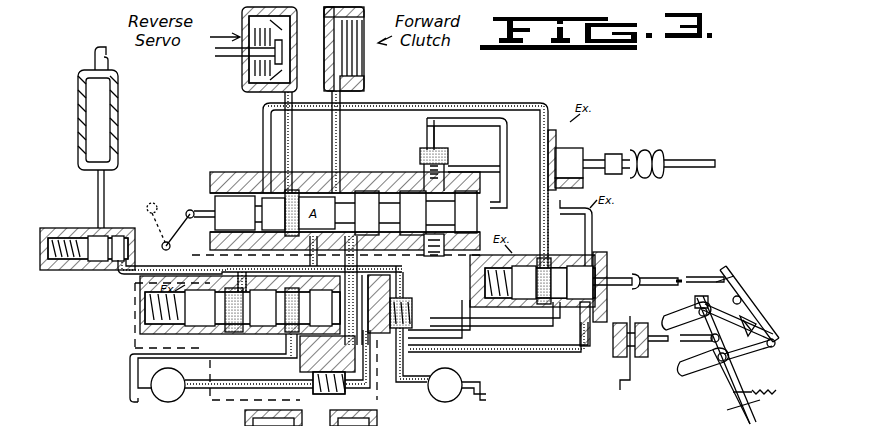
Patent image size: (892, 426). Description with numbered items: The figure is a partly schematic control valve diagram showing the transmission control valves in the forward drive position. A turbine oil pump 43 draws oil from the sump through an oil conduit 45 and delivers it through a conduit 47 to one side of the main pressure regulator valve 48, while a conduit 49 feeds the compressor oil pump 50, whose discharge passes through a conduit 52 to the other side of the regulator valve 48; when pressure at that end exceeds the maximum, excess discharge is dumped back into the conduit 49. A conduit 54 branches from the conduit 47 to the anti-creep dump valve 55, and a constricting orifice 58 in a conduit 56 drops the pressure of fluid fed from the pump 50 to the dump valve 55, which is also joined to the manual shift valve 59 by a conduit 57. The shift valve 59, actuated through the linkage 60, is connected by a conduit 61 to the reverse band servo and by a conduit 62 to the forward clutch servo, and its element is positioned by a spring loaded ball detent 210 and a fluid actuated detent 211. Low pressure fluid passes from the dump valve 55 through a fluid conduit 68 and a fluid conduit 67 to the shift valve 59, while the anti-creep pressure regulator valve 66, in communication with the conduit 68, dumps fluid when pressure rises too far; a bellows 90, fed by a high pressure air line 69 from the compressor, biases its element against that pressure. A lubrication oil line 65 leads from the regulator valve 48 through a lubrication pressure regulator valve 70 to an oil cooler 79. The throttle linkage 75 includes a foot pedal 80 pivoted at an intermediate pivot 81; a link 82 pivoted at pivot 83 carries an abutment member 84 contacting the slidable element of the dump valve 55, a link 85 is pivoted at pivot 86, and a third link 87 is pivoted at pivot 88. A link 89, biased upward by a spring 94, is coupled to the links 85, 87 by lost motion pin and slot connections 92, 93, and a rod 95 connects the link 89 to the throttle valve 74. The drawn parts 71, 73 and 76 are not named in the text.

The turbine oil pump 43 is at (426, 334).
The oil conduit 45 is at (490, 397).
The conduit 47 is at (453, 336).
The main pressure regulator valve 48 is at (132, 317).
The conduit 49 is at (130, 399).
The compressor oil pump 50 is at (168, 385).
The conduit 52 is at (200, 392).
The conduit 54 is at (520, 360).
The anti-creep dump valve 55 is at (621, 269).
The conduit 56 is at (500, 338).
The conduit 57 is at (597, 226).
The constricting orifice 58 is at (402, 274).
The manual shift valve 59 is at (241, 183).
The linkage 60 is at (178, 200).
The conduit 61 is at (294, 158).
The conduit 62 is at (293, 130).
The lubrication oil line 65 is at (182, 264).
The anti-creep pressure regulator valve 66 is at (586, 154).
The fluid conduit 67 is at (519, 104).
The fluid conduit 68 is at (540, 232).
The high pressure air line 69 is at (695, 161).
The lubrication pressure regulator valve 70 is at (80, 263).
The valve housing wall 71 is at (582, 358).
The throttle valve stem 73 is at (644, 290).
The throttle valve 74 is at (612, 354).
The throttle linkage 75 is at (684, 392).
The kickdown valve stem 76 is at (622, 386).
The oil cooler 79 is at (120, 123).
The foot pedal 80 is at (750, 276).
The pivot 81 is at (756, 312).
The link 82 is at (700, 277).
The pivot 83 is at (730, 270).
The abutment member 84 is at (658, 276).
The link 85 is at (750, 364).
The pivot 86 is at (772, 348).
The third link 87 is at (752, 326).
The pivot 88 is at (745, 296).
The link 89 is at (762, 393).
The bellows 90 is at (652, 153).
The lost motion pin and slot connection 92 is at (698, 341).
The lost motion pin and slot connection 93 is at (686, 312).
The spring 94 is at (727, 410).
The rod 95 is at (678, 366).
The spring loaded ball detent 210 is at (440, 256).
The fluid actuated detent 211 is at (448, 168).